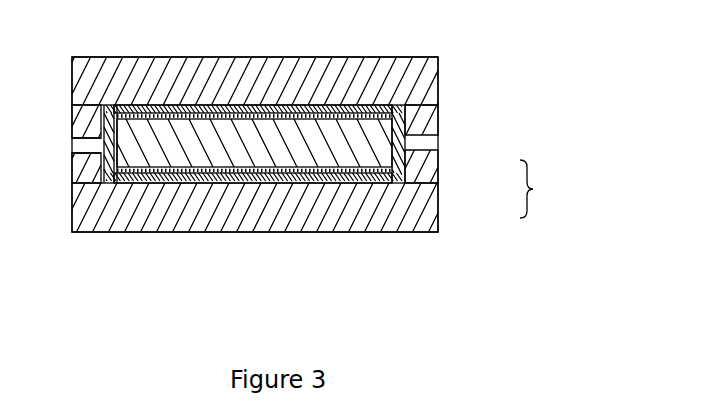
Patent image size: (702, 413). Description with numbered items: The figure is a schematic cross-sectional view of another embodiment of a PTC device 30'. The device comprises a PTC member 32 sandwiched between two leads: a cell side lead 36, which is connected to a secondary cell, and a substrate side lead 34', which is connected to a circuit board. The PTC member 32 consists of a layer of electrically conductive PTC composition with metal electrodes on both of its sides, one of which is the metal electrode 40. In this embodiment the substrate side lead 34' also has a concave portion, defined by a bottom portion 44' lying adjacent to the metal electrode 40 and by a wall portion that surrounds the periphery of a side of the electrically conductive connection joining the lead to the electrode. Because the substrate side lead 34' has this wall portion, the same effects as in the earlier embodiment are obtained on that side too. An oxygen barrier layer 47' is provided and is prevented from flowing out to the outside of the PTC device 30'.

The PTC device 30' is at (255, 186).
The PTC member 32 is at (387, 140).
The substrate side lead 34' is at (546, 189).
The cell side lead 36 is at (427, 75).
The metal electrode 40 is at (408, 165).
The bottom portion 44' is at (294, 207).
The oxygen barrier layer 47' is at (59, 141).